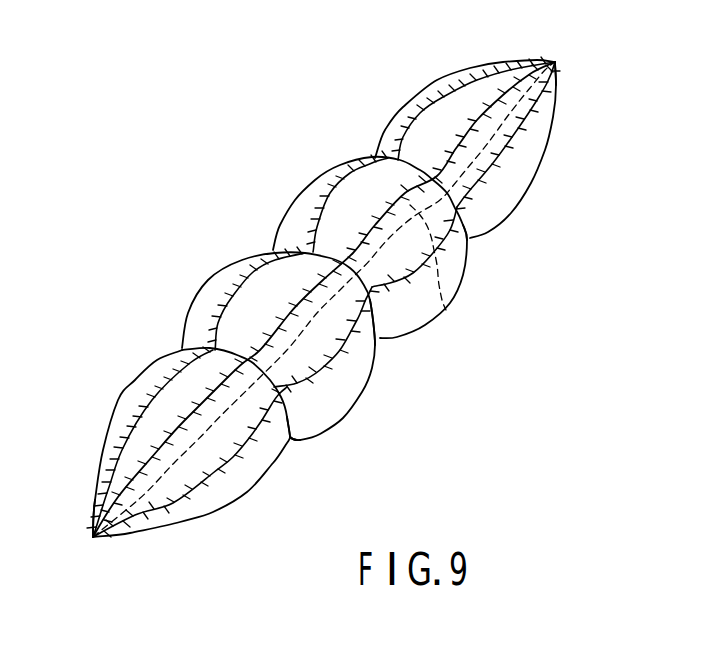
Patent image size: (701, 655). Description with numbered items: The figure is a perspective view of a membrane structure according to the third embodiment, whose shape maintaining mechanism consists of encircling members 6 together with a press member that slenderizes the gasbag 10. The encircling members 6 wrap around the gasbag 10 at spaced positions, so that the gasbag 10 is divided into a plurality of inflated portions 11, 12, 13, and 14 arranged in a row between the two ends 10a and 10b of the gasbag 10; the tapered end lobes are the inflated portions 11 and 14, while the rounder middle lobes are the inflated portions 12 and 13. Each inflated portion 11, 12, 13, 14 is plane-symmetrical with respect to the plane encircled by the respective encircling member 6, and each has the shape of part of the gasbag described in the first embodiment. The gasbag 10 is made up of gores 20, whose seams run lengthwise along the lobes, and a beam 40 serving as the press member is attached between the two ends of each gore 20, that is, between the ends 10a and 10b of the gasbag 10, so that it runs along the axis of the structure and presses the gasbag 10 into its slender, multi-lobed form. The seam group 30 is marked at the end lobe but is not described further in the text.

The gasbag 10 is at (253, 213).
The end of the gasbag 10a is at (92, 539).
The end of the gasbag 10b is at (555, 62).
The inflated portion 11 is at (130, 383).
The inflated portion 12 is at (208, 279).
The inflated portion 13 is at (308, 175).
The inflated portion 14 is at (413, 97).
The encircling member 6 is at (292, 442).
The gore 20 is at (203, 500).
The seams of fourth lobe 30 is at (507, 163).
The beam 40 is at (447, 310).